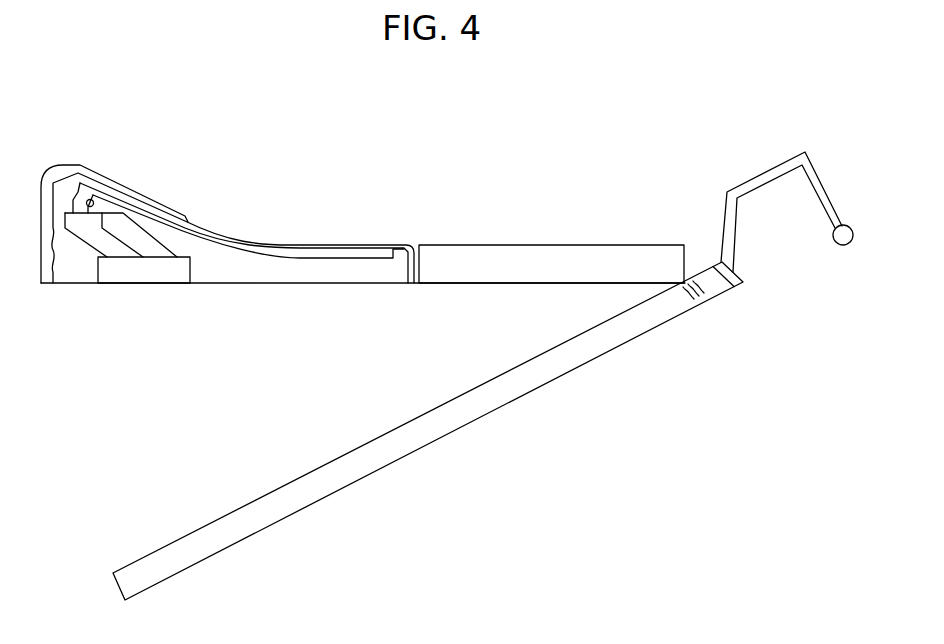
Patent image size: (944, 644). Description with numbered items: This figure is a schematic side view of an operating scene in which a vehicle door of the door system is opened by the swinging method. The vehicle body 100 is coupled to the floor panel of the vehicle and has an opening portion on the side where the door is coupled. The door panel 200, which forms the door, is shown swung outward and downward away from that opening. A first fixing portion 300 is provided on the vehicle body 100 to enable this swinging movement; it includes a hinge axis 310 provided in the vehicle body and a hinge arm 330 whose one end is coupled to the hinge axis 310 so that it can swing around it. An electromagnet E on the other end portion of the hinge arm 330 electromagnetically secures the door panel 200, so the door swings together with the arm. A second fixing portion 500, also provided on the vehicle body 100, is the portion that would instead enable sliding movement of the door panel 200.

The vehicle body 100 is at (543, 252).
The door panel 200 is at (433, 441).
The first fixing portion 300 is at (784, 186).
The hinge axis 310 is at (843, 245).
The hinge arm 330 is at (748, 188).
The second fixing portion 500 is at (82, 243).
The electromagnet E is at (742, 288).